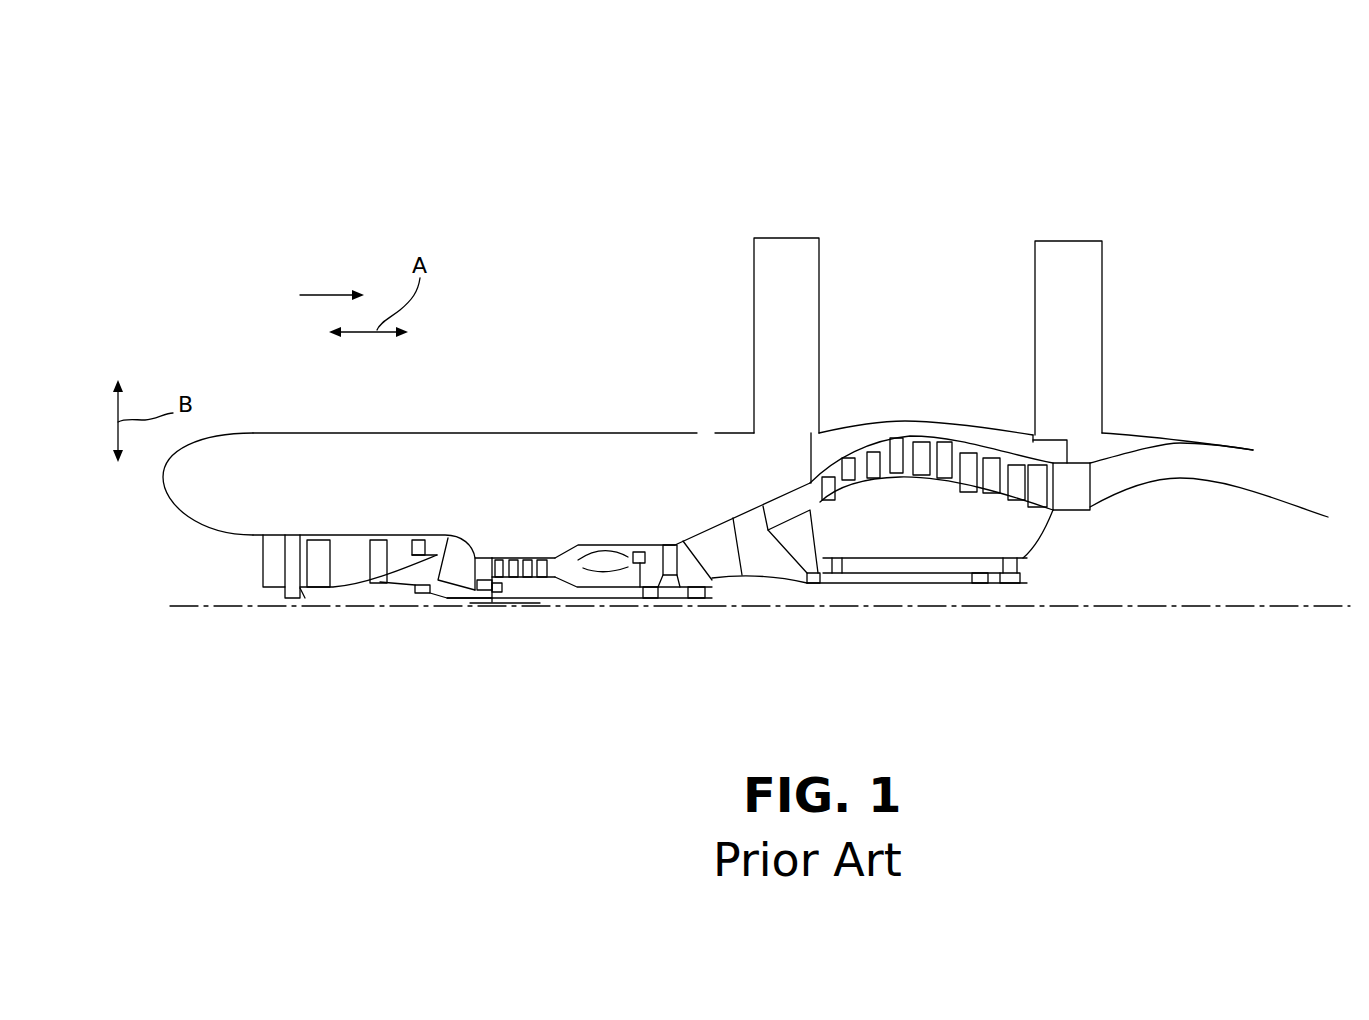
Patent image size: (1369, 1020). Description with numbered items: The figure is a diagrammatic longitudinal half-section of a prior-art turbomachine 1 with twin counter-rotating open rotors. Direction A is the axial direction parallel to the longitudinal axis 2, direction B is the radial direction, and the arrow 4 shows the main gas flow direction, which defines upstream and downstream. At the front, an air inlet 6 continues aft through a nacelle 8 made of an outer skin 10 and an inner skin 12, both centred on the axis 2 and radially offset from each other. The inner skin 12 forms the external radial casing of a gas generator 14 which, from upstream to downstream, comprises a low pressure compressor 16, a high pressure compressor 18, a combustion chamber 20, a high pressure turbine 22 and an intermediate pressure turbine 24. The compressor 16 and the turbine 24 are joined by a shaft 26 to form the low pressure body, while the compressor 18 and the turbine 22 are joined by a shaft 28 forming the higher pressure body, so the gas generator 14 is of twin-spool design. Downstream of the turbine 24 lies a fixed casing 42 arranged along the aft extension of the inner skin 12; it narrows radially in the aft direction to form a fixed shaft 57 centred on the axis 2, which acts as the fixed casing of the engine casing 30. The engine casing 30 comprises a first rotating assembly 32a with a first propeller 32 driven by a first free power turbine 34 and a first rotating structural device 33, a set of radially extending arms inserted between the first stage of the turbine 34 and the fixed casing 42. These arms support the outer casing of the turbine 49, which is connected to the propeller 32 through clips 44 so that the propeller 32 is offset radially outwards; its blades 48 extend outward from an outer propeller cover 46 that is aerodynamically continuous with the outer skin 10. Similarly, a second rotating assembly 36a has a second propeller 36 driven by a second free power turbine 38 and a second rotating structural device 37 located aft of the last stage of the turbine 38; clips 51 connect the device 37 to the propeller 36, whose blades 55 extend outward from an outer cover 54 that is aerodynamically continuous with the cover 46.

The turbomachine 1 is at (228, 397).
The longitudinal axis 2 is at (183, 608).
The main gas flow direction 4 is at (343, 294).
The air inlet 6 is at (205, 549).
The nacelle 8 is at (397, 452).
The outer skin 10 is at (565, 430).
The inner skin 12 is at (355, 540).
The gas generator 14 is at (513, 643).
The low pressure compressor 16 is at (275, 582).
The high pressure compressor 18 is at (500, 593).
The combustion chamber 20 is at (603, 562).
The high pressure turbine 22 is at (637, 573).
The intermediate pressure turbine 24 is at (668, 572).
The shaft 26 is at (532, 597).
The shaft 28 is at (590, 585).
The engine casing 30 is at (973, 203).
The first propeller 32 is at (787, 230).
The first rotating assembly 32a is at (800, 150).
The first rotating structural device 33 is at (773, 510).
The first free power turbine 34 is at (897, 458).
The second propeller 36 is at (1065, 230).
The second rotating assembly 36a is at (1138, 148).
The second rotating structural device 37 is at (1075, 490).
The second free power turbine 38 is at (1015, 490).
The fixed casing 42 is at (708, 547).
The clips 44 is at (814, 465).
The outer propeller cover 46 is at (900, 422).
The blades 48 is at (805, 295).
The outer casing of the turbine 49 is at (927, 438).
The clips 51 is at (1058, 450).
The outer casing or cover 54 is at (973, 425).
The blades 55 is at (1085, 300).
The fixed shaft 57 is at (907, 585).